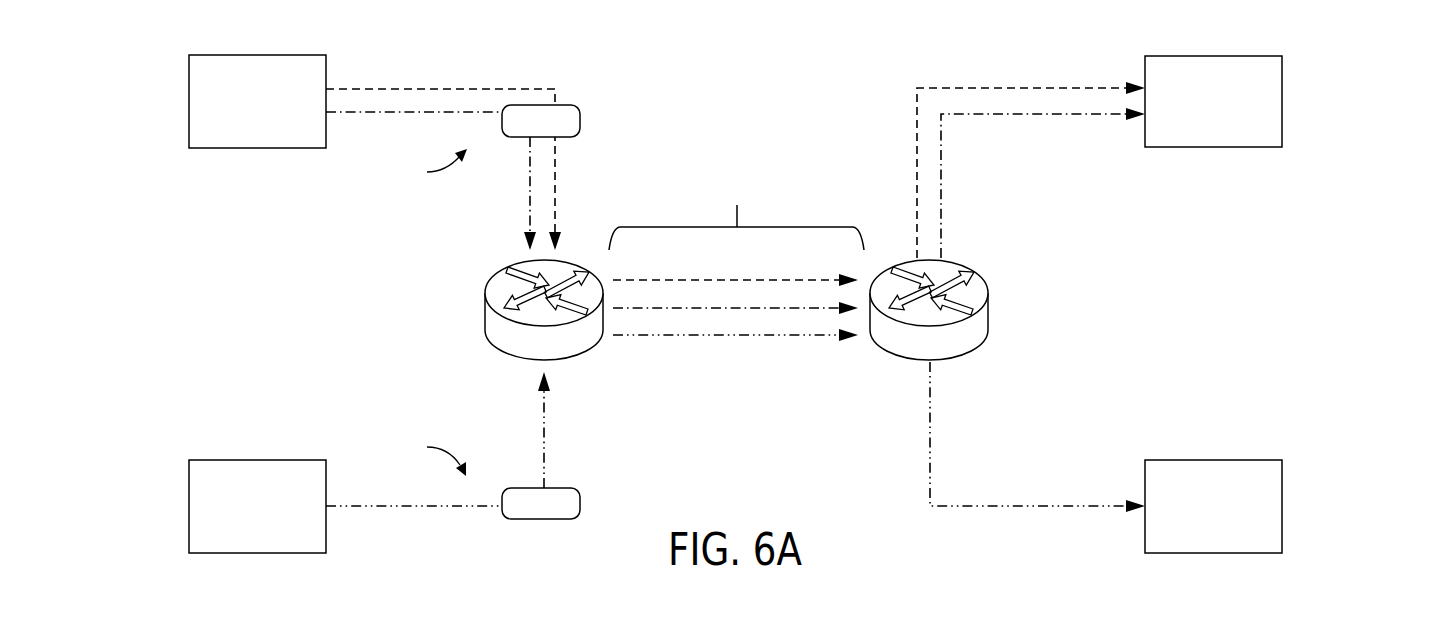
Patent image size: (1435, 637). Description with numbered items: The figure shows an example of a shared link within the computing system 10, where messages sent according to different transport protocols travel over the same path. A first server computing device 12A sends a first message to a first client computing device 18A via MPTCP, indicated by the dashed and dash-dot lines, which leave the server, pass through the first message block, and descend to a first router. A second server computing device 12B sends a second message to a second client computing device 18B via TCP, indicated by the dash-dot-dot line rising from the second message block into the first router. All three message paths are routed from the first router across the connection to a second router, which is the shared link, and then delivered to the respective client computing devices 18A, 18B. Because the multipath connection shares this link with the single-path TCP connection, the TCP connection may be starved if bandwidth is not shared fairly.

The computing system 10 is at (1349, 30).
The first server computing device 12A is at (239, 128).
The second server computing device 12B is at (239, 534).
The first client computing device 18A is at (1231, 128).
The second client computing device 18B is at (1231, 532).